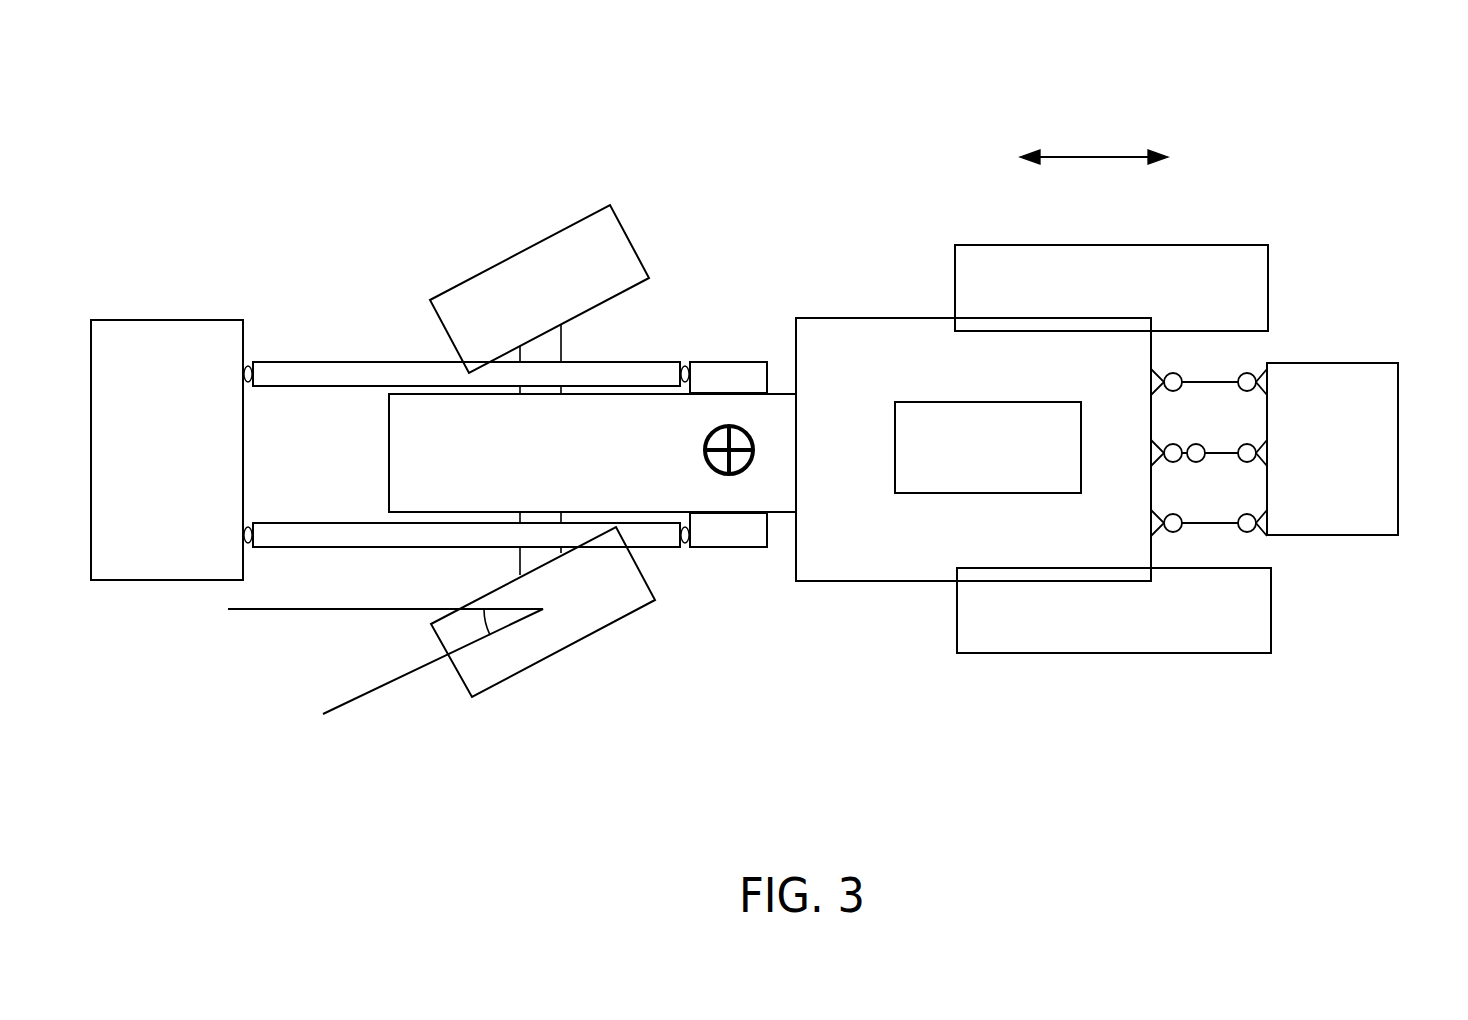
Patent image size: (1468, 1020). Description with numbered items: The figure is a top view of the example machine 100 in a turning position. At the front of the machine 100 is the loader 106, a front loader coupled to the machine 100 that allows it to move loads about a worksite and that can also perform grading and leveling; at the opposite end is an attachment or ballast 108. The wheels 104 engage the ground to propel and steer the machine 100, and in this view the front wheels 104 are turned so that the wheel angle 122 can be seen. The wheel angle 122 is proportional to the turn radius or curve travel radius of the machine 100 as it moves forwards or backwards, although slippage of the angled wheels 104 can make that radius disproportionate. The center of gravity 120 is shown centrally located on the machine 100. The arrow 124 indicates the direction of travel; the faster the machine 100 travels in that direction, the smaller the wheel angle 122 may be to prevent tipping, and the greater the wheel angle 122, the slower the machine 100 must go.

The machine 100 is at (1292, 93).
The wheels 104 is at (507, 280).
The loader 106 is at (312, 323).
The attachment or ballast 108 is at (1373, 387).
The center of gravity 120 is at (729, 422).
The wheel angle 122 is at (325, 609).
The arrow 124 is at (1094, 145).